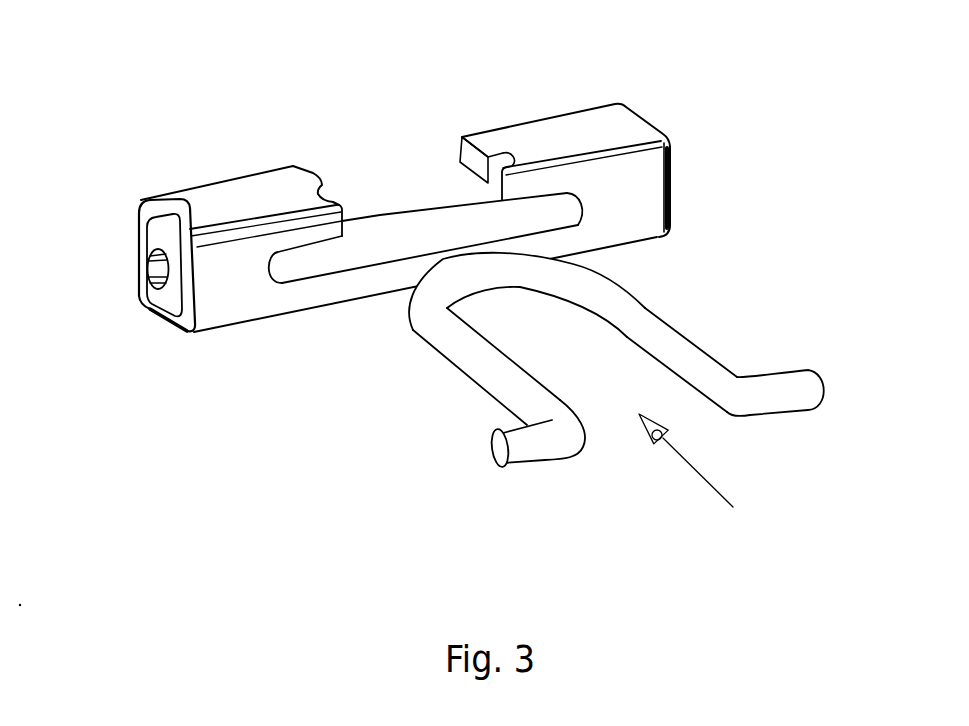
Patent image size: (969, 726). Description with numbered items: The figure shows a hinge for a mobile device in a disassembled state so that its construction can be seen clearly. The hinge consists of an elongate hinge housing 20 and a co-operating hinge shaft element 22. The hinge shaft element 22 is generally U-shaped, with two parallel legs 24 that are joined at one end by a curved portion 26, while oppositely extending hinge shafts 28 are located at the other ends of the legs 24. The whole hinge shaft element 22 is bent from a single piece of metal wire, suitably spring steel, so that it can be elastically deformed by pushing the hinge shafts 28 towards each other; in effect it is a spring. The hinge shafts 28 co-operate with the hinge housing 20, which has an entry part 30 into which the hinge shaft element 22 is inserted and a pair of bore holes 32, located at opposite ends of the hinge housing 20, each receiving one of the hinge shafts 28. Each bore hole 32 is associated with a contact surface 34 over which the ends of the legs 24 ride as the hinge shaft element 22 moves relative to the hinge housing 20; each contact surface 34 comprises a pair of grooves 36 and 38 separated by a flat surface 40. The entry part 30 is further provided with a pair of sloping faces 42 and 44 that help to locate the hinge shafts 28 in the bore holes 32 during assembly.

The hinge housing 20 is at (218, 196).
The hinge shaft element 22 is at (616, 406).
The legs 24 is at (445, 358).
The curved portion 26 is at (517, 288).
The hinge shafts 28 is at (497, 455).
The entry part 30 is at (355, 259).
The bore holes 32 is at (150, 269).
The contact surface 34 is at (436, 149).
The groove 36 is at (479, 189).
The groove 38 is at (503, 153).
The flat surface 40 is at (462, 138).
The sloping face 42 is at (279, 268).
The sloping face 44 is at (553, 208).